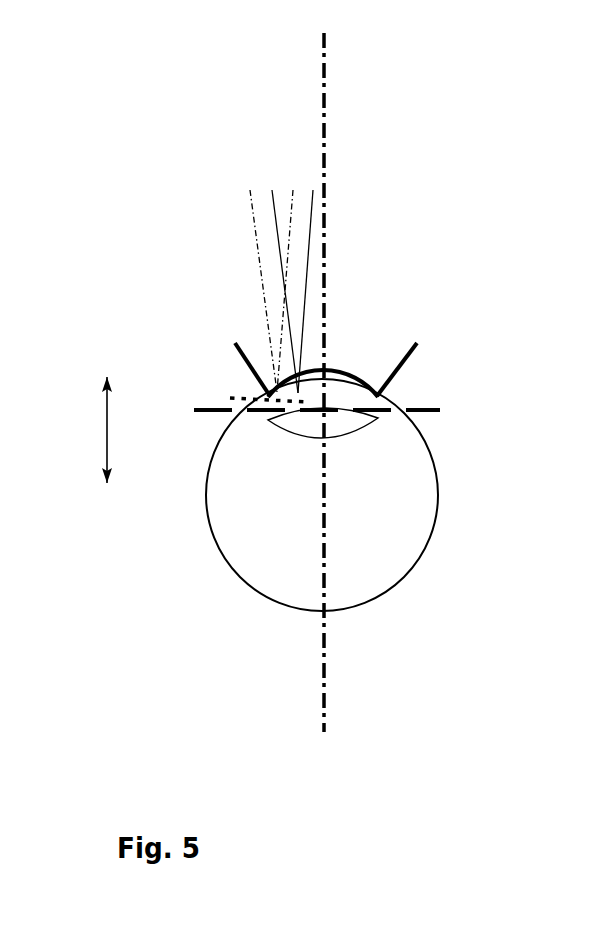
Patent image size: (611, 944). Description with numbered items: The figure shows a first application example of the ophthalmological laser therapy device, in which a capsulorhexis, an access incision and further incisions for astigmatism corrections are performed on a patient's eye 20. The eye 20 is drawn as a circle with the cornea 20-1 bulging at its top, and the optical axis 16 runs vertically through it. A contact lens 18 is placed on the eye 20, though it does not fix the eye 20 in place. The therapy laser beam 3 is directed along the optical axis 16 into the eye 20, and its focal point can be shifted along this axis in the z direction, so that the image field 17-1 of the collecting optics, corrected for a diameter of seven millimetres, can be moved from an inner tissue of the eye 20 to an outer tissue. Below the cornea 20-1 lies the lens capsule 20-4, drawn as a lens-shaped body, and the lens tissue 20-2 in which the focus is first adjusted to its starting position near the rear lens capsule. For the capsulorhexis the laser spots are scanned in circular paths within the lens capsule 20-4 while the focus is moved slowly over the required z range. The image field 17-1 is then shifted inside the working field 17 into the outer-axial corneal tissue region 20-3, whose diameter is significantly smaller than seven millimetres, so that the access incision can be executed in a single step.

The therapy laser beam 3 is at (310, 240).
The optical axis 16 is at (322, 680).
The working field 17 is at (188, 412).
The image field 17-1 is at (227, 392).
The contact lens 18 is at (418, 355).
The eye 20 is at (405, 583).
The cornea 20-1 is at (340, 377).
The lens tissue 20-2 is at (330, 448).
The corneal tissue region for the access incision 20-3 is at (270, 398).
The lens capsule 20-4 is at (373, 412).